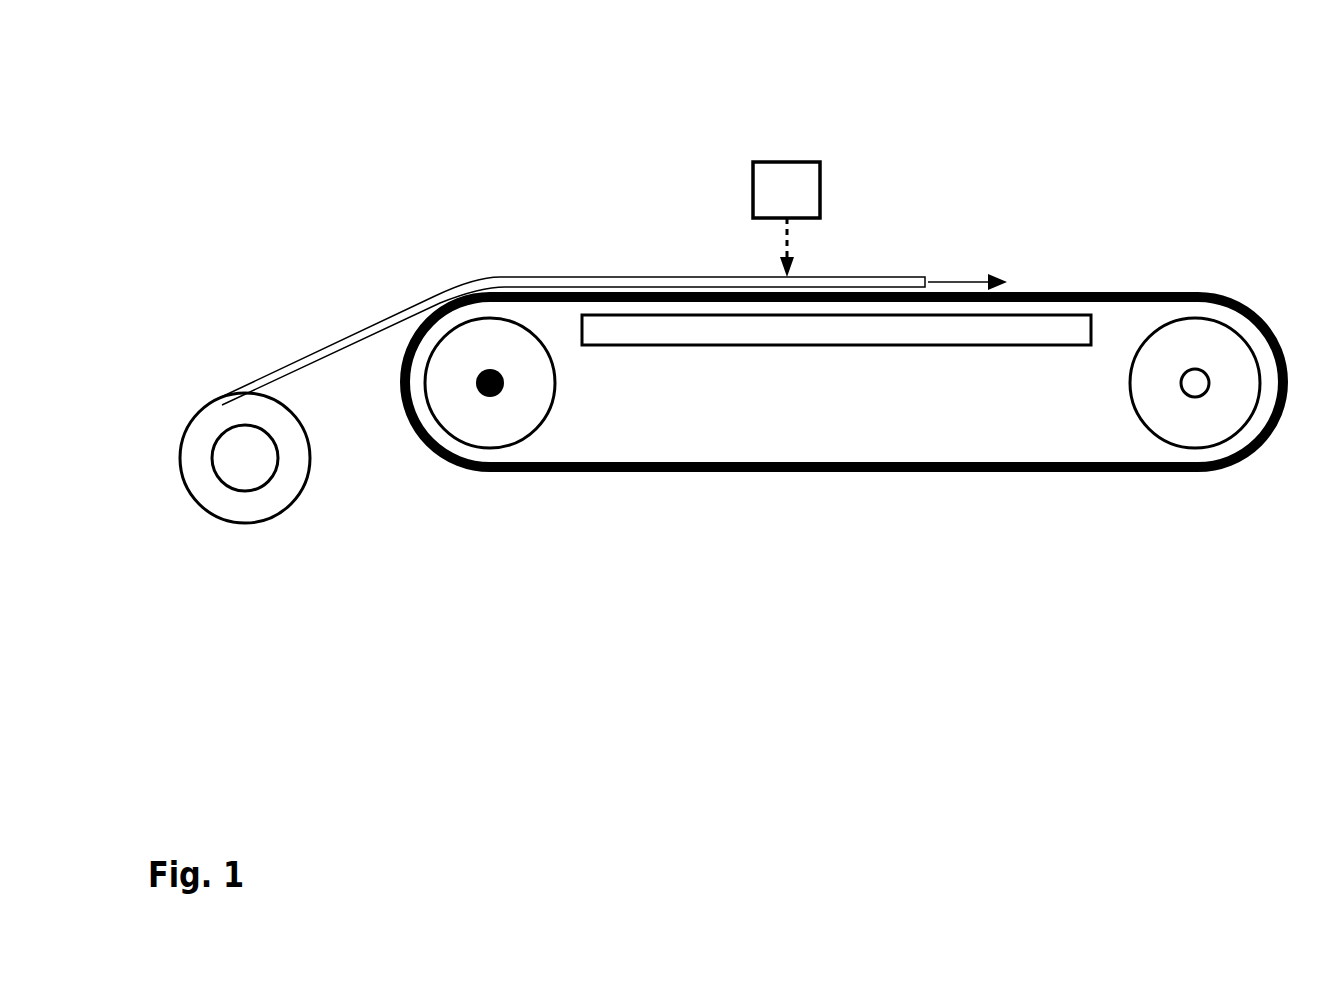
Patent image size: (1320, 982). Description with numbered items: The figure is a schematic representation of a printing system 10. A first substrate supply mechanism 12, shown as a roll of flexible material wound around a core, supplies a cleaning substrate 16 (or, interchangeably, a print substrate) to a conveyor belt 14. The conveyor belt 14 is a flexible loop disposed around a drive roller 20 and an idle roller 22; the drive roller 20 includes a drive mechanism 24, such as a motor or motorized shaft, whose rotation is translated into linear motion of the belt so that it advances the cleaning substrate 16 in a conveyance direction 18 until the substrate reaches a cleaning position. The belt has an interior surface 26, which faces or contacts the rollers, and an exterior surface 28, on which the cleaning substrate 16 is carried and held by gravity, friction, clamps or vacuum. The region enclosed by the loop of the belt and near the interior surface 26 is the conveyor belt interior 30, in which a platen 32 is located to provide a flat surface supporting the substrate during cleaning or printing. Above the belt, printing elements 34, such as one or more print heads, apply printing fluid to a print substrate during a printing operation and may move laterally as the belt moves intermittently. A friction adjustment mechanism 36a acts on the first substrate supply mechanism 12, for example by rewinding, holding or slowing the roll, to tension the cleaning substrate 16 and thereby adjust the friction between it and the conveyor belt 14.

The printing system 10 is at (358, 48).
The first substrate supply mechanism 12 is at (192, 415).
The conveyor belt 14 is at (940, 472).
The cleaning substrate 16 is at (850, 278).
The conveyance direction 18 is at (950, 278).
The drive roller 20 is at (468, 443).
The idle roller 22 is at (1193, 447).
The drive mechanism 24 is at (492, 386).
The interior surface 26 is at (1012, 453).
The exterior surface 28 is at (1097, 287).
The conveyor belt interior 30 is at (805, 418).
The platen 32 is at (728, 330).
The printing elements 34 is at (753, 180).
The friction adjustment mechanism 36a is at (240, 492).